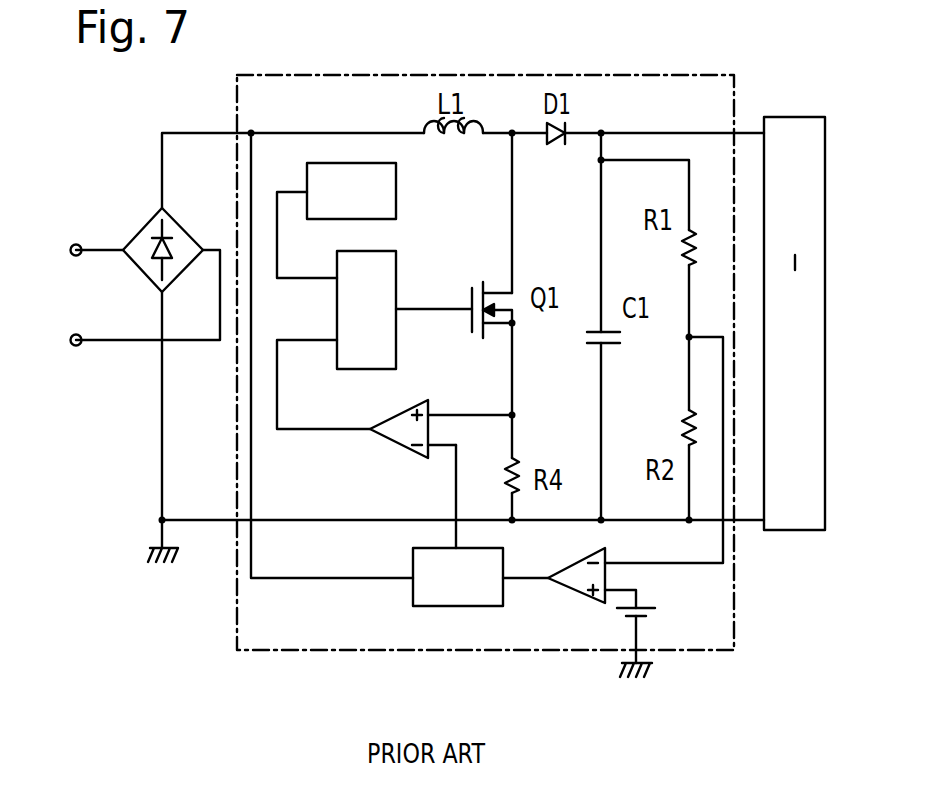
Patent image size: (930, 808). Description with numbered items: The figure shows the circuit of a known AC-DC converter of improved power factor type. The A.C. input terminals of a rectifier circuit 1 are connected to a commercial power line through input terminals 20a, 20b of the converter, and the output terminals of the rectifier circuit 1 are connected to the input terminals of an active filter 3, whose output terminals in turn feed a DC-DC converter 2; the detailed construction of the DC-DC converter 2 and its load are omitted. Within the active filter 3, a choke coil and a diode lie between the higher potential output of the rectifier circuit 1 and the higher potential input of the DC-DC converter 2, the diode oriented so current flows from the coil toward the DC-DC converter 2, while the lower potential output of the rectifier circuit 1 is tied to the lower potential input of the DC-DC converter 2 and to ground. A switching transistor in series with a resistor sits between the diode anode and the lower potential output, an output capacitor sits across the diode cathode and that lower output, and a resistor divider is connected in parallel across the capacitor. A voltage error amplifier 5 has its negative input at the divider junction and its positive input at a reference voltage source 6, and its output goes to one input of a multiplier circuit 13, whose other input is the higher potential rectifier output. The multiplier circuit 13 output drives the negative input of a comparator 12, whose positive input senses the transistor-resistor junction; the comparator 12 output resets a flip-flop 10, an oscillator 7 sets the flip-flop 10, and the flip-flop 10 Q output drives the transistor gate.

The rectifier circuit 1 is at (148, 235).
The DC-DC converter 2 is at (796, 518).
The active filter 3 is at (262, 608).
The voltage error amplifier 5 is at (580, 582).
The reference voltage source 6 is at (655, 612).
The oscillator 7 is at (383, 191).
The flip-flop 10 is at (386, 271).
The comparator 12 is at (395, 435).
The multiplier circuit 13 is at (455, 592).
The input terminal 20a is at (76, 238).
The input terminal 20b is at (76, 352).